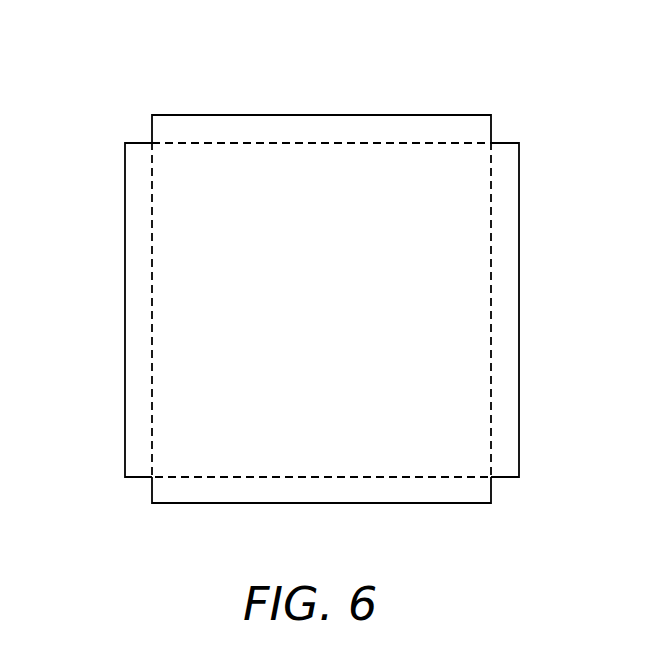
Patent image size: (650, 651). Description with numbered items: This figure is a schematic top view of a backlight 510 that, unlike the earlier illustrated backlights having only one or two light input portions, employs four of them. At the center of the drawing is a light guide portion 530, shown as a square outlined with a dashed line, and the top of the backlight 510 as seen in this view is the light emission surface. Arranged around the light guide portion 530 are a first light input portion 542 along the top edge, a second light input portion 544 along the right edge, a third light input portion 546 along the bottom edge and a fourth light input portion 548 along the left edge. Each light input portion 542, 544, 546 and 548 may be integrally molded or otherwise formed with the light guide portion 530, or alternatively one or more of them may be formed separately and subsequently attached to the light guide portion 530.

The backlight 510 is at (388, 67).
The light guide portion 530 is at (343, 313).
The first light input portion 542 is at (302, 115).
The second light input portion 544 is at (519, 313).
The third light input portion 546 is at (240, 503).
The fourth light input portion 548 is at (125, 303).